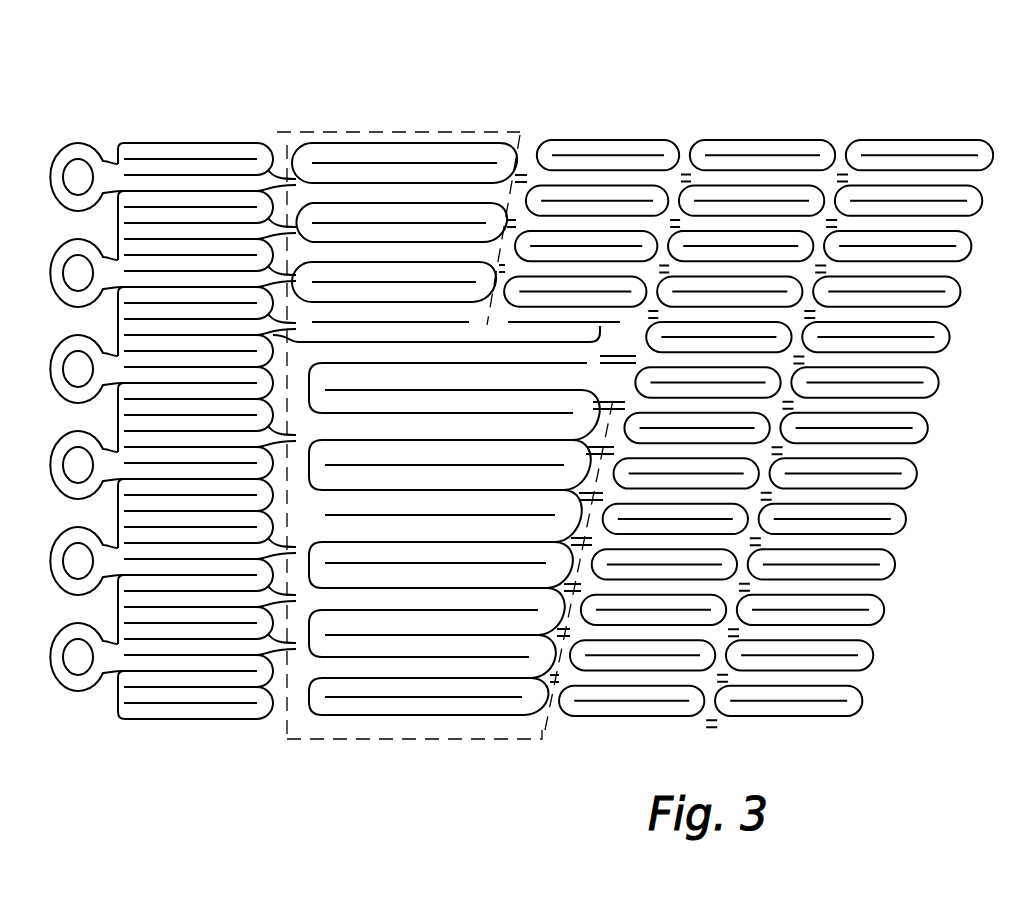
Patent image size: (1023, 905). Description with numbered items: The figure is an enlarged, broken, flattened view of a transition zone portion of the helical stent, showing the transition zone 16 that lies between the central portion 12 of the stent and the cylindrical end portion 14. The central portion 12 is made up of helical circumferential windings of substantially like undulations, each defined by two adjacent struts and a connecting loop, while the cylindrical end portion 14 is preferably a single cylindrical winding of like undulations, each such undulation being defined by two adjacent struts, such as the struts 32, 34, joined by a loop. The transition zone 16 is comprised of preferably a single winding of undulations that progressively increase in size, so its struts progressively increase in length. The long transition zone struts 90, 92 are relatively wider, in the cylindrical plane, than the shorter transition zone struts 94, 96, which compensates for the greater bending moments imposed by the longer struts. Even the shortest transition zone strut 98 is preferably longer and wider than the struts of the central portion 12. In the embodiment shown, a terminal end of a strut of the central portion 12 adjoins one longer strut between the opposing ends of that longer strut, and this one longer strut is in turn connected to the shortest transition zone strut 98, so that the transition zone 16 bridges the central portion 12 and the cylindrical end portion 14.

The central portion 12 is at (1017, 104).
The cylindrical portion 14 is at (176, 116).
The transition zone 16 is at (398, 112).
The strut 32 is at (446, 389).
The strut 34 is at (446, 415).
The long transition zone strut 90 is at (339, 530).
The long transition zone strut 92 is at (381, 500).
The shorter transition zone strut 94 is at (407, 297).
The shorter transition zone strut 96 is at (434, 275).
The shortest transition zone strut 98 is at (441, 335).